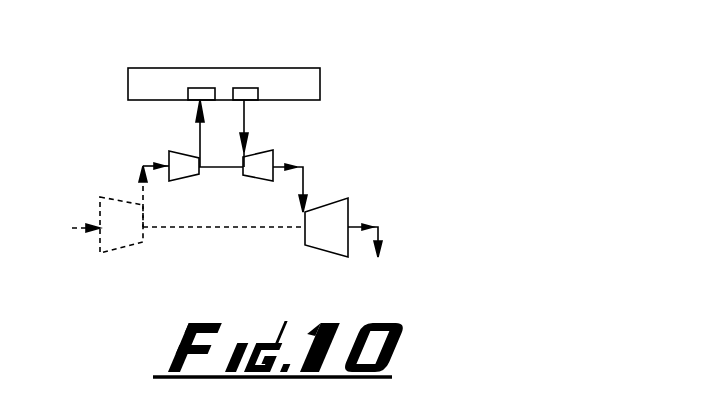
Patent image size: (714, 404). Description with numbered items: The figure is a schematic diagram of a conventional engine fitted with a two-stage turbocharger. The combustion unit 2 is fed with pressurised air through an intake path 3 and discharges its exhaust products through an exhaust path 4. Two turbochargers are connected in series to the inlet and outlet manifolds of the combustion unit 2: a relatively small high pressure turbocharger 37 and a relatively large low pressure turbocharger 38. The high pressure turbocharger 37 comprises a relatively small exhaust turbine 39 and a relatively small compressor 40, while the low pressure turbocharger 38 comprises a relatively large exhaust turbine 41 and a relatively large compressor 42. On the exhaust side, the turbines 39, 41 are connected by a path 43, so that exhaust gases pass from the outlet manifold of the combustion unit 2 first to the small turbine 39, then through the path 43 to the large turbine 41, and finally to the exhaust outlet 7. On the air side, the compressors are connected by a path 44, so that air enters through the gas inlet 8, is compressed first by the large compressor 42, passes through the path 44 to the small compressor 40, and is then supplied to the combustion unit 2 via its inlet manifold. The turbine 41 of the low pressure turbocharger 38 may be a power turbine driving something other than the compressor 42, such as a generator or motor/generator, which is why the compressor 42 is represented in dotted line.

The combustion unit 2 is at (295, 75).
The intake path 3 is at (198, 131).
The exhaust path 4 is at (244, 122).
The exhaust outlet 7 is at (382, 244).
The gas inlet 8 is at (88, 232).
The high pressure turbocharger 37 is at (140, 136).
The low pressure turbocharger 38 is at (164, 270).
The exhaust turbine 39 is at (278, 153).
The compressor 40 is at (169, 153).
The exhaust turbine 41 is at (352, 206).
The compressor 42 is at (99, 207).
The path 43 is at (305, 183).
The path 44 is at (142, 198).